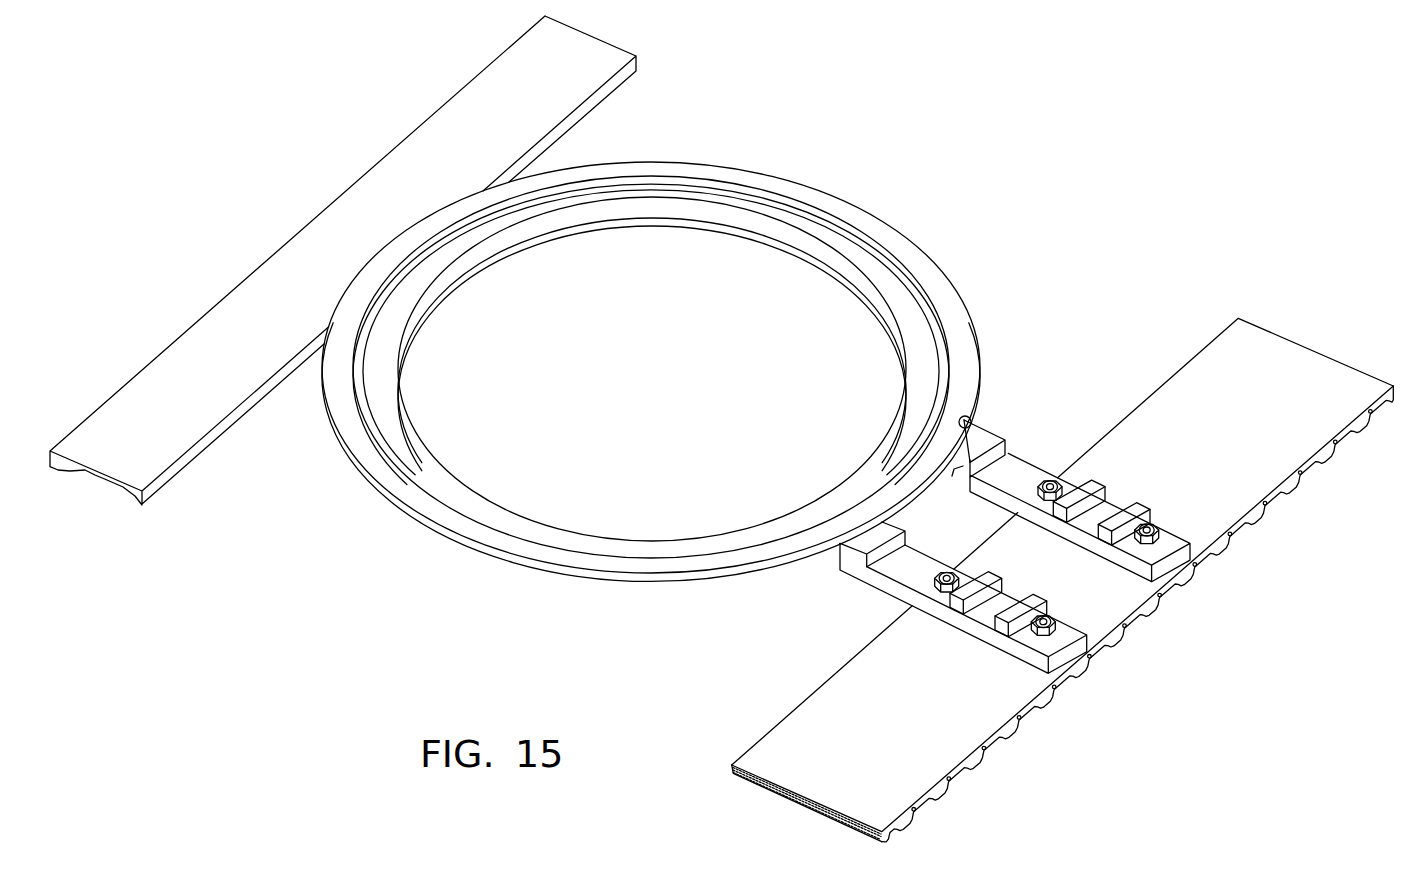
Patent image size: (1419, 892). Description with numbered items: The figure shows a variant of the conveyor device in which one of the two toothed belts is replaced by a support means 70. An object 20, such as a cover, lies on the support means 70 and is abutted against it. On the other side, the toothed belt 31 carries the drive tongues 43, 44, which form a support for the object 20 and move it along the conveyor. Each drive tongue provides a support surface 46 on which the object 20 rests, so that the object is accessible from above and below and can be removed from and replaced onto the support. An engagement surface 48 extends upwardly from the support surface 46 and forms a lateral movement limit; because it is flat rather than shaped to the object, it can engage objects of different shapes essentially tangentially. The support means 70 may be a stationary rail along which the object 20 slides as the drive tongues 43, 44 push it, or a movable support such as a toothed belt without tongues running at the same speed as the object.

The object 20 is at (770, 187).
The toothed belt 31 is at (806, 722).
The drive tongue 43 is at (918, 585).
The drive tongue 44 is at (1020, 470).
The support surface 46 is at (952, 472).
The engagement surface 48 is at (962, 424).
The support means 70 is at (388, 178).